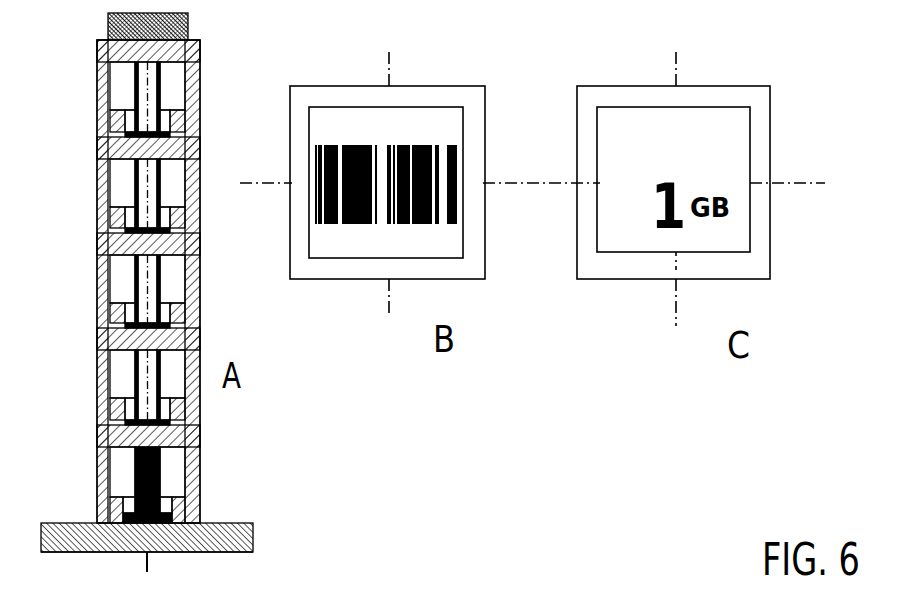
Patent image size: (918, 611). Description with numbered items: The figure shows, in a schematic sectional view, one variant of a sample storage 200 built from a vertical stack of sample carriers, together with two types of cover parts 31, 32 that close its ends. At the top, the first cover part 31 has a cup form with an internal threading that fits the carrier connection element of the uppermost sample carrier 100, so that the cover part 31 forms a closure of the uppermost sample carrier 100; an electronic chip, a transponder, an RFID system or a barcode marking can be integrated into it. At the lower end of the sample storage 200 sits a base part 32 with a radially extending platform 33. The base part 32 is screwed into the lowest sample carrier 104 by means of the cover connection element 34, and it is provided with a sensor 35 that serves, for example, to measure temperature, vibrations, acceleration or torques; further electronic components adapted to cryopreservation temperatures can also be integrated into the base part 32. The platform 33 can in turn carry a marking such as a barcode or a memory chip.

The cover part 31 is at (187, 15).
The uppermost sample carrier 100 is at (97, 157).
The sample storage 200 is at (165, 309).
The lowest sample carrier 104 is at (131, 474).
The sensor 35 is at (160, 472).
The cover connection element 34 is at (109, 521).
The platform 33 is at (238, 535).
The base part 32 is at (215, 552).